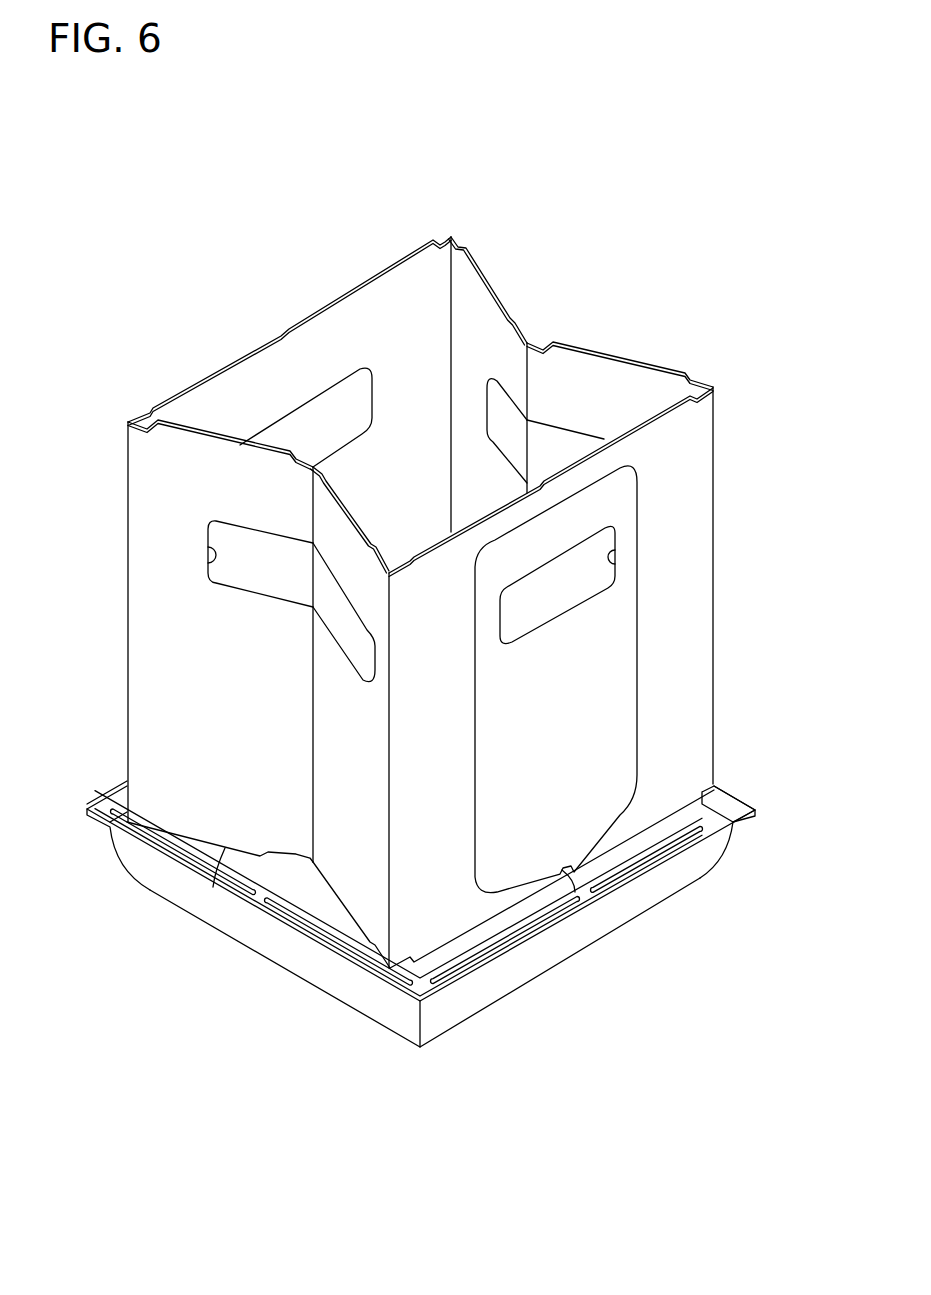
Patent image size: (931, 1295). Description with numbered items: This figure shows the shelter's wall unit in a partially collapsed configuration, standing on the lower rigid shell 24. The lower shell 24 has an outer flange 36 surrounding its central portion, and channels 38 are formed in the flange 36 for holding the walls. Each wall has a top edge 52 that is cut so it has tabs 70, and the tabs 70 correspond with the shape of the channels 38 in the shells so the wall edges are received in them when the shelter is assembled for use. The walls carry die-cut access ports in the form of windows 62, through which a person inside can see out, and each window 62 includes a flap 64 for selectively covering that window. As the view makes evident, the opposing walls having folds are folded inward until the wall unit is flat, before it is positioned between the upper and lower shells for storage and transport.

The lower rigid shell 24 is at (478, 1019).
The outer flange 36 is at (733, 790).
The channels 38 is at (333, 942).
The top edge 52 is at (460, 243).
The windows 62 is at (204, 562).
The flap 64 is at (277, 573).
The tabs 70 is at (438, 233).